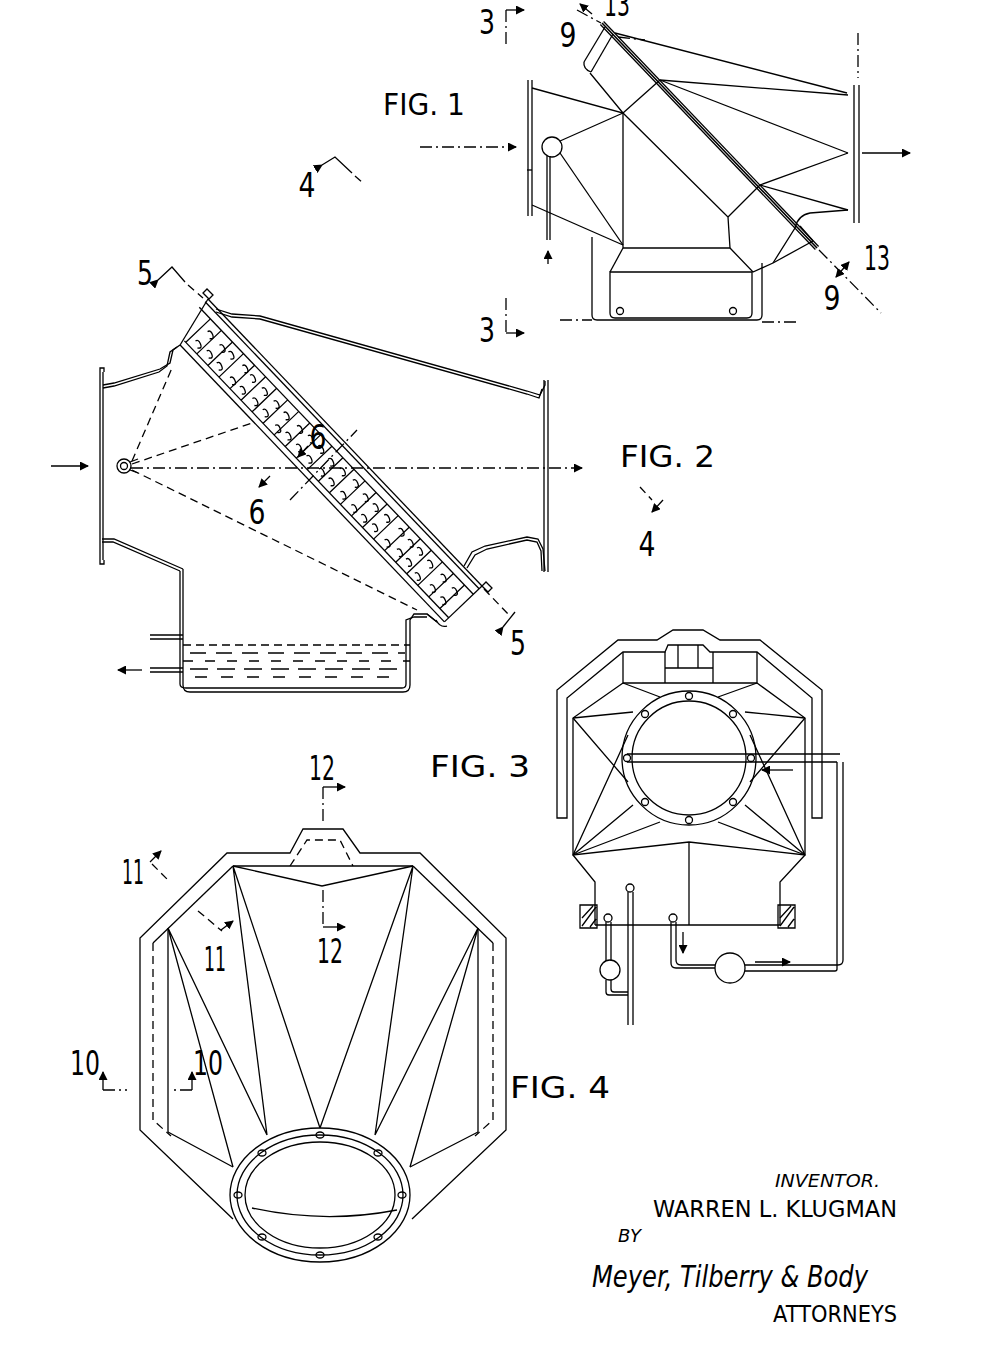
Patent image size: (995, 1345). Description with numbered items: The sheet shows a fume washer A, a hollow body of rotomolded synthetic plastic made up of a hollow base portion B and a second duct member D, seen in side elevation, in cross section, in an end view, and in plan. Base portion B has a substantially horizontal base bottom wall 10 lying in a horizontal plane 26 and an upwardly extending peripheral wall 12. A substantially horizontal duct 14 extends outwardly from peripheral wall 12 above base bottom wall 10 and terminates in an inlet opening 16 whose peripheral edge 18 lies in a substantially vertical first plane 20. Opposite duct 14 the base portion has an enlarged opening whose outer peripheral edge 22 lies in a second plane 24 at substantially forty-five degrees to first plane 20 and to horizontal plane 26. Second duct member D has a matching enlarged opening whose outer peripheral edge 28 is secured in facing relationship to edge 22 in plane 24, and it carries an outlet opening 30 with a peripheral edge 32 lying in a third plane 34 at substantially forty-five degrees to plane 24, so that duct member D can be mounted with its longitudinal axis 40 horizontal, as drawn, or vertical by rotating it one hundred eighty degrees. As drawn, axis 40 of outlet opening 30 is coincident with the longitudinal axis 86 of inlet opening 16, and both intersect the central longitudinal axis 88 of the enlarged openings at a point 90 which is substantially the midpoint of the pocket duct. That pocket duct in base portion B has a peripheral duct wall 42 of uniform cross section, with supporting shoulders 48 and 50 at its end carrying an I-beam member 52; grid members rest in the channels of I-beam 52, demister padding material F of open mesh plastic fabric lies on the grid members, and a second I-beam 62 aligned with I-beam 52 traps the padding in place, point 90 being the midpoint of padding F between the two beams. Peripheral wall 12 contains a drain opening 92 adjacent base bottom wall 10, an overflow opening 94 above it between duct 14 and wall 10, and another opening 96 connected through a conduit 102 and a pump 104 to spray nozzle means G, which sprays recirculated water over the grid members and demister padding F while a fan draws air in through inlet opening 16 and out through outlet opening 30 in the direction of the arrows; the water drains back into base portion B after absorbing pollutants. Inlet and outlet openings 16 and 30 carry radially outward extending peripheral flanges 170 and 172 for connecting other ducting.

In FIG. 1, the base bottom wall 10 is at (714, 321).
In FIG. 2, the base bottom wall 10 is at (272, 693).
In FIG. 3, the base bottom wall 10 is at (650, 928).
In FIG. 1, the peripheral wall 12 is at (675, 230).
In FIG. 2, the peripheral wall 12 is at (181, 604).
In FIG. 3, the peripheral wall 12 is at (610, 875).
In FIG. 1, the horizontal duct 14 is at (567, 110).
In FIG. 2, the horizontal duct 14 is at (148, 366).
In FIG. 1, the inlet opening 16 is at (527, 101).
In FIG. 2, the inlet opening 16 is at (100, 412).
In FIG. 1, the peripheral edge 18 is at (527, 173).
In FIG. 2, the peripheral edge 18 is at (102, 376).
In FIG. 1, the first plane 20 is at (527, 237).
In FIG. 1, the outer peripheral edge 22 is at (810, 255).
In FIG. 1, the second plane 24 is at (852, 279).
In FIG. 1, the horizontal plane 26 is at (792, 323).
In FIG. 1, the outer peripheral edge 28 is at (815, 249).
In FIG. 4, the outer peripheral edge 28 is at (460, 913).
In FIG. 1, the outlet opening 30 is at (860, 121).
In FIG. 2, the outlet opening 30 is at (549, 406).
In FIG. 4, the outlet opening 30 is at (378, 1203).
In FIG. 1, the peripheral edge 32 is at (860, 97).
In FIG. 2, the peripheral edge 32 is at (549, 384).
In FIG. 4, the peripheral edge 32 is at (370, 1247).
In FIG. 1, the third plane 34 is at (862, 58).
In FIG. 1, the longitudinal axis 40 is at (882, 153).
In FIG. 2, the longitudinal axis 40 is at (480, 467).
In FIG. 1, the peripheral duct wall 42 is at (688, 146).
In FIG. 2, the peripheral duct wall 42 is at (458, 600).
In FIG. 2, the supporting shoulder 48 is at (182, 348).
In FIG. 2, the supporting shoulder 50 is at (440, 621).
In FIG. 2, the I-beam member 52 is at (372, 537).
In FIG. 2, the second I-beam 62 is at (388, 494).
In FIG. 1, the longitudinal axis 86 is at (440, 148).
In FIG. 2, the longitudinal axis 86 is at (224, 470).
In FIG. 2, the central longitudinal axis 88 is at (345, 446).
In FIG. 2, the intersection point 90 is at (322, 467).
In FIG. 3, the drain opening 92 is at (600, 921).
In FIG. 3, the overflow opening 94 is at (635, 889).
In FIG. 3, the opening 96 is at (678, 917).
In FIG. 3, the conduit 102 is at (798, 971).
In FIG. 3, the pump 104 is at (732, 984).
In FIG. 2, the peripheral flange 170 is at (102, 559).
In FIG. 2, the peripheral flange 172 is at (546, 573).
In FIG. 4, the peripheral flange 172 is at (353, 1259).
In FIG. 1, the fume washer A is at (683, 35).
In FIG. 2, the fume washer A is at (266, 304).
In FIG. 4, the fume washer A is at (132, 1007).
In FIG. 1, the base portion B is at (660, 306).
In FIG. 2, the base portion B is at (343, 696).
In FIG. 3, the base portion B is at (567, 865).
In FIG. 1, the second duct member D is at (762, 63).
In FIG. 2, the second duct member D is at (324, 331).
In FIG. 4, the second duct member D is at (315, 1085).
In FIG. 2, the demister padding material F is at (413, 547).
In FIG. 2, the spray nozzle means G is at (124, 480).
In FIG. 3, the spray nozzle means G is at (710, 763).